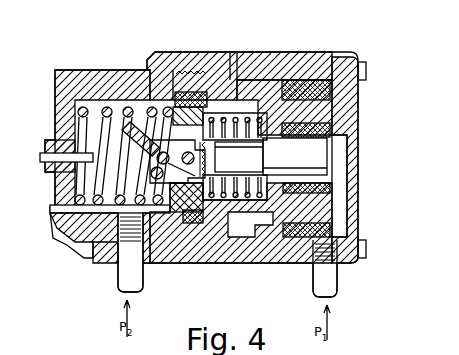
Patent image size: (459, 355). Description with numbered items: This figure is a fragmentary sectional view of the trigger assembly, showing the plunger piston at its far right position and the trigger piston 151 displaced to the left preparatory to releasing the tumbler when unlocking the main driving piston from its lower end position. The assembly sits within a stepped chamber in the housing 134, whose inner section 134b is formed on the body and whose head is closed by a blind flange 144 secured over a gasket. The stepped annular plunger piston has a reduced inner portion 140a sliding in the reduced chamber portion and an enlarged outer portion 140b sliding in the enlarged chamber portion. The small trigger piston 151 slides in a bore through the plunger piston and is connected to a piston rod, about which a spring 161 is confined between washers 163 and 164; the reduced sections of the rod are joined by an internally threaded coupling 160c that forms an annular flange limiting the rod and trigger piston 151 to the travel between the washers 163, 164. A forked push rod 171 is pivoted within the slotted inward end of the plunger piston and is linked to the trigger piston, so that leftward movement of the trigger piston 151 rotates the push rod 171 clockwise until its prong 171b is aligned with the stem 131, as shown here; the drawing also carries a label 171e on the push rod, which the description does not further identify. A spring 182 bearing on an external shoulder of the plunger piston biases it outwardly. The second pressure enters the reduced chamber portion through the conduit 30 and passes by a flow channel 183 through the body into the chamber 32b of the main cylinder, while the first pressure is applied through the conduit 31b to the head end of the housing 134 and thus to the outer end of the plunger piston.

The housing 134 is at (322, 53).
The inner section 134b is at (179, 38).
The blind flange 144 is at (356, 96).
The trigger piston 151 is at (312, 157).
The spring 161 is at (243, 120).
The internally threaded coupling 160c is at (238, 147).
The spring 182 is at (58, 110).
The forked push rod 171 is at (160, 114).
The prong 171b is at (112, 110).
The spring 171e is at (137, 112).
The stem 131 is at (48, 151).
The flow channel 183 is at (52, 209).
The chamber 32b is at (58, 227).
The conduit 30 is at (117, 273).
The conduit 31b is at (369, 293).
The reduced inner portion 140a is at (230, 263).
The washer 164 is at (176, 263).
The enlarged outer portion 140b is at (268, 263).
The washer 163 is at (284, 263).